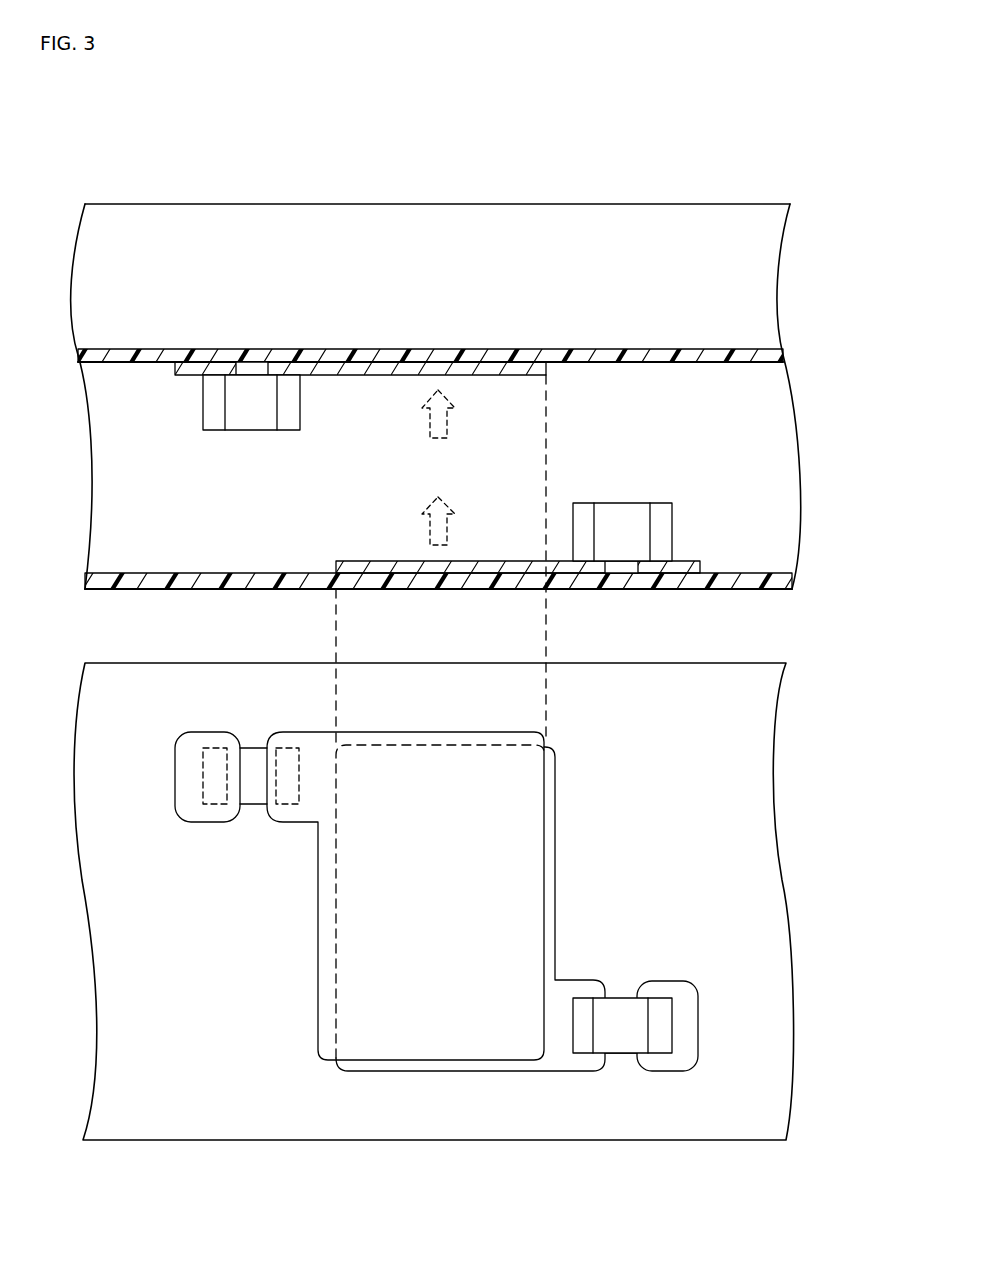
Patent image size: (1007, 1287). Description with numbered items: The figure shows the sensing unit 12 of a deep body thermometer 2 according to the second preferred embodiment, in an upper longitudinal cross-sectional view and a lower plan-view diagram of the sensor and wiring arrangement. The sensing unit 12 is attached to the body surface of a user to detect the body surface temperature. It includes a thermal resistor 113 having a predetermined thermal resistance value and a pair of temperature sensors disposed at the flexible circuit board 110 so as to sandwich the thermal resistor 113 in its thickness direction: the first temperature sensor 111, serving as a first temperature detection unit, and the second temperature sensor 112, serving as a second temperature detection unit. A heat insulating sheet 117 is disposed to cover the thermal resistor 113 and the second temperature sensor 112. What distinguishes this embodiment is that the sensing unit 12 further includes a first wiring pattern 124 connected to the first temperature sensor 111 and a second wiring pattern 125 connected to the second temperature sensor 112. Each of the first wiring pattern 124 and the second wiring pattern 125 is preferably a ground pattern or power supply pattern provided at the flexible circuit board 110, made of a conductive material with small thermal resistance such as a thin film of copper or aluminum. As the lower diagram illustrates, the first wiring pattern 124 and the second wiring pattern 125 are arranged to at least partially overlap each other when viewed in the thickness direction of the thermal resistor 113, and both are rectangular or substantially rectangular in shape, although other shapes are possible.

The deep body thermometer 2 is at (738, 153).
The sensing unit 12 is at (574, 191).
The flexible circuit board 110 is at (470, 352).
The first temperature sensor 111 is at (673, 524).
The second temperature sensor 112 is at (302, 397).
The thermal resistor 113 is at (262, 562).
The heat insulating sheet 117 is at (646, 212).
The first wiring pattern 124 is at (370, 560).
The second wiring pattern 125 is at (497, 376).